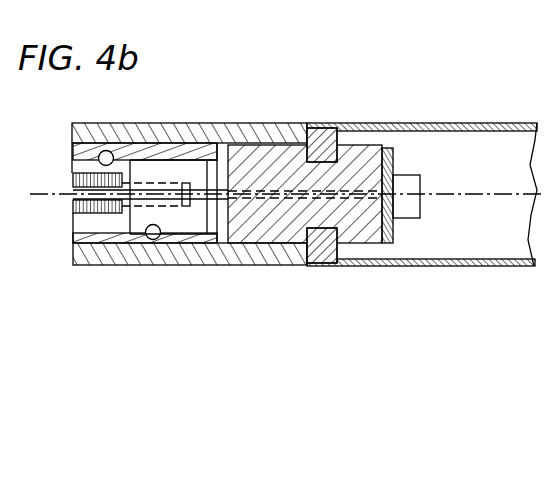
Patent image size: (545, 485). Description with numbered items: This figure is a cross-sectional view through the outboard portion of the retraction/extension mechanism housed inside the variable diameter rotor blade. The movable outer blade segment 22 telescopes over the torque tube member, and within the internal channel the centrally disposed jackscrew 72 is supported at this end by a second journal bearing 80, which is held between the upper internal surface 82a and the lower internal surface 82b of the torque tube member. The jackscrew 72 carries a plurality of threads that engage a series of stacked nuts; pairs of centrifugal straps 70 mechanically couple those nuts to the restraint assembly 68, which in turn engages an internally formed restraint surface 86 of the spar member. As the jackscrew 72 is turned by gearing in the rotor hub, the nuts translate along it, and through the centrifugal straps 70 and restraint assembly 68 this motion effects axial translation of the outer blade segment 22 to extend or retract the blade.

The movable outer blade segment 22 is at (446, 120).
The restraint assembly 68 is at (376, 137).
The centrifugal straps 70 is at (72, 189).
The jackscrew 72 is at (73, 208).
The second journal bearing 80 is at (177, 172).
The upper internal surface 82a is at (106, 151).
The lower internal surface 82b is at (155, 240).
The restraint surface 86 is at (326, 128).